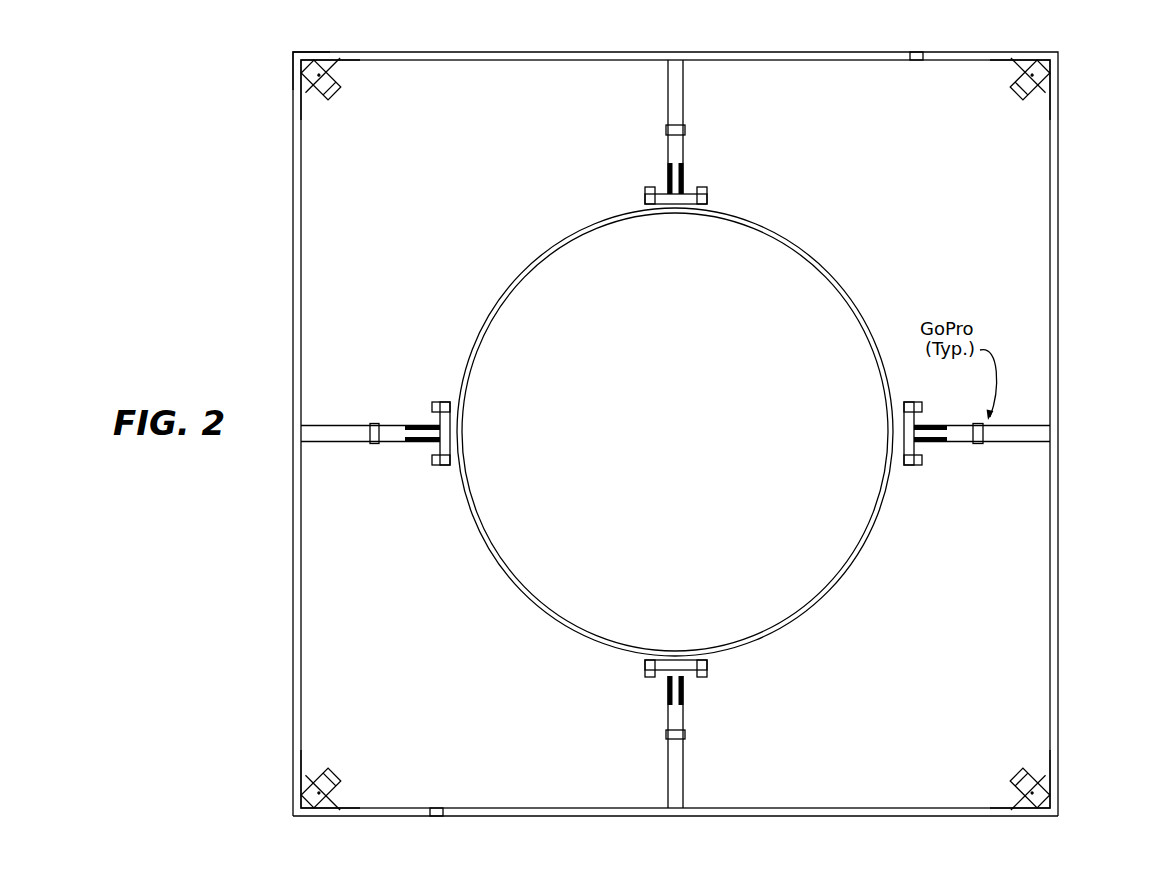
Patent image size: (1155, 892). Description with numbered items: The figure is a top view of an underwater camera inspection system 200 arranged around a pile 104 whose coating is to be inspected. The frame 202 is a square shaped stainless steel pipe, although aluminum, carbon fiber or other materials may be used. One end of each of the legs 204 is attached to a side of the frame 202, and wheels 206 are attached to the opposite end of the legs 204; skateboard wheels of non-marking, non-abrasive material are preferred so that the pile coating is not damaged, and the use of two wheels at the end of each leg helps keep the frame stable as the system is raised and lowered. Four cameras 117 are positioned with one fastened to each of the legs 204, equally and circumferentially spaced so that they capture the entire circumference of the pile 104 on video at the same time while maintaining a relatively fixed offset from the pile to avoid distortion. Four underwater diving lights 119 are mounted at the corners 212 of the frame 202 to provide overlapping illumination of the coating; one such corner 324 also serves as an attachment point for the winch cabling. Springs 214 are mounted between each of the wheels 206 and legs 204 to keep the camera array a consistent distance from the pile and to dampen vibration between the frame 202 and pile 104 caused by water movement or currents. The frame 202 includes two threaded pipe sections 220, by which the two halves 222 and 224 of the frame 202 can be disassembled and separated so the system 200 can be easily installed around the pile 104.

The underwater camera inspection system 200 is at (160, 100).
The frame 202 is at (293, 320).
The legs 204 is at (668, 105).
The wheels 206 is at (708, 193).
The corners 212 is at (320, 52).
The springs 214 is at (668, 175).
The threaded pipe sections 220 is at (914, 52).
The frame half 222 is at (350, 816).
The frame half 224 is at (712, 816).
The corner 324 is at (292, 58).
The pile 104 is at (493, 298).
The cameras 117 is at (668, 130).
The underwater diving lights 119 is at (257, 134).